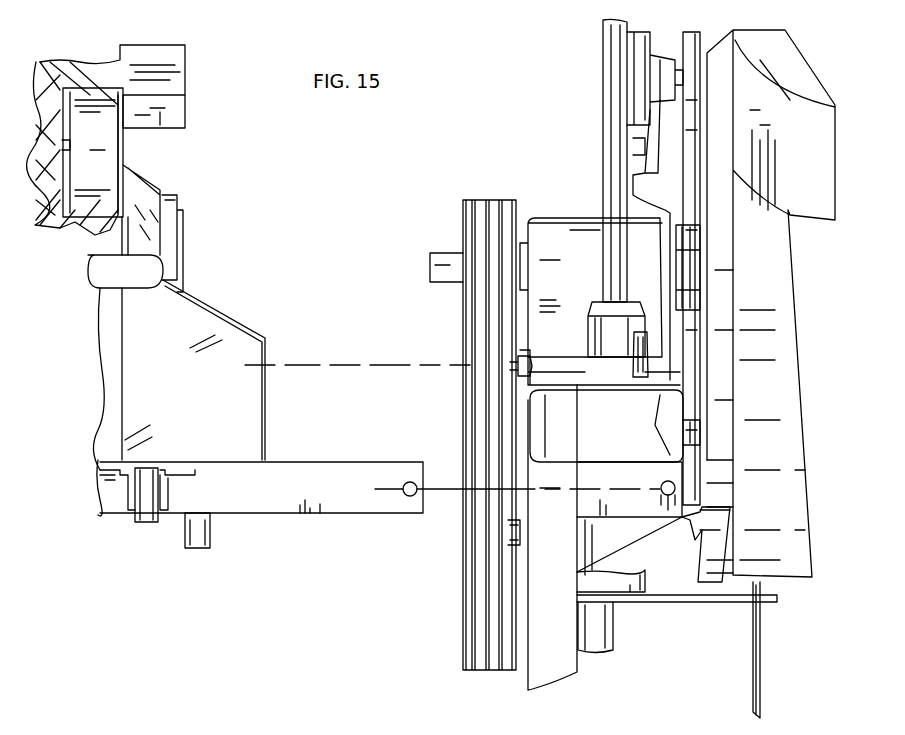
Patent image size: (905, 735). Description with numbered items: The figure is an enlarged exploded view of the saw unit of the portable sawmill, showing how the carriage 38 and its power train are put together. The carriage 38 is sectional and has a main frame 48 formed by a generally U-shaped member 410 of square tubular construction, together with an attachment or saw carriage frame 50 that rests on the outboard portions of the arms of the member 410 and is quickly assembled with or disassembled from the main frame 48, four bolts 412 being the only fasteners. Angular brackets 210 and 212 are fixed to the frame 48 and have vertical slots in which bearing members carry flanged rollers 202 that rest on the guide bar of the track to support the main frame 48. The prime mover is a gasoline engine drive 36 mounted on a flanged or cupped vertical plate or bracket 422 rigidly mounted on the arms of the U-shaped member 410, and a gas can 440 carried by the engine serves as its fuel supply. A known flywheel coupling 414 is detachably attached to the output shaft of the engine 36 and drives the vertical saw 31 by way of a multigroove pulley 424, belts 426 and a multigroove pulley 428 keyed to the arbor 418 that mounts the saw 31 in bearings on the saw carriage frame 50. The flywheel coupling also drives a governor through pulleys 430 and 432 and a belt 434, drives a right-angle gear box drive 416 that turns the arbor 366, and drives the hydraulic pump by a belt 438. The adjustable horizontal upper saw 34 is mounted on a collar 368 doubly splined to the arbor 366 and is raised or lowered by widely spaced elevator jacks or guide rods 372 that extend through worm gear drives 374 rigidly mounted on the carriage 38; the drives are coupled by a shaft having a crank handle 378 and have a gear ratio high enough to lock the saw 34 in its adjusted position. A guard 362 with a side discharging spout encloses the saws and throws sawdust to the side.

The vertical saw 31 is at (752, 676).
The adjustable horizontal upper saw 34 is at (655, 603).
The gasoline engine drive 36 is at (163, 180).
The carriage 38 is at (456, 528).
The main frame 48 is at (378, 485).
The saw carriage frame 50 is at (578, 674).
The rollers 202 is at (148, 523).
The angular bracket 210 is at (98, 483).
The angular bracket 212 is at (183, 472).
The guard 362 is at (787, 290).
The arbor 366 is at (615, 636).
The collar 368 is at (645, 584).
The elevator jack or guide rod 372 is at (613, 157).
The worm gear drive 374 is at (590, 322).
The crank handle 378 is at (640, 392).
The U-shaped member 410 is at (342, 515).
The bolts 412 is at (516, 366).
The flywheel coupling 414 is at (180, 198).
The right-angle gear box drive 416 is at (588, 218).
The arbor 418 is at (522, 536).
The vertical plate or bracket 422 is at (117, 132).
The multigroove pulley 424 is at (504, 335).
The belts 426 is at (475, 607).
The multigroove pulley 428 is at (463, 435).
The pulley 430 is at (696, 47).
The pulley 432 is at (700, 277).
The belt 434 is at (690, 165).
The belt 438 is at (650, 340).
The gas can 440 is at (186, 77).